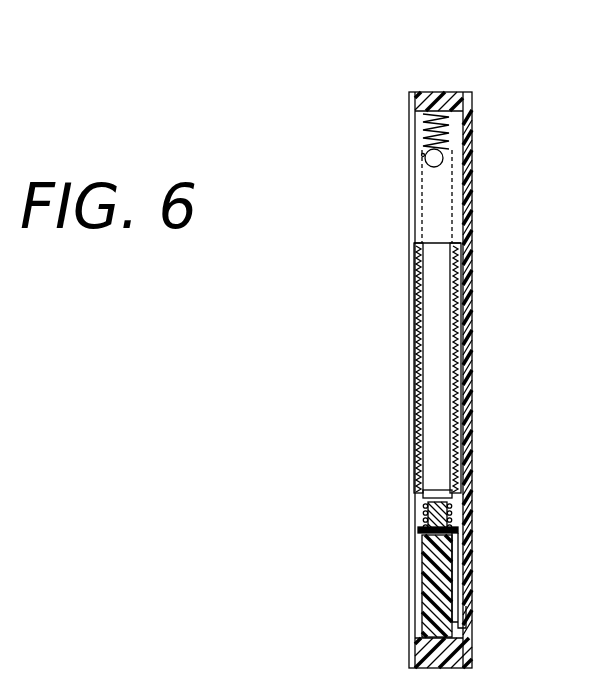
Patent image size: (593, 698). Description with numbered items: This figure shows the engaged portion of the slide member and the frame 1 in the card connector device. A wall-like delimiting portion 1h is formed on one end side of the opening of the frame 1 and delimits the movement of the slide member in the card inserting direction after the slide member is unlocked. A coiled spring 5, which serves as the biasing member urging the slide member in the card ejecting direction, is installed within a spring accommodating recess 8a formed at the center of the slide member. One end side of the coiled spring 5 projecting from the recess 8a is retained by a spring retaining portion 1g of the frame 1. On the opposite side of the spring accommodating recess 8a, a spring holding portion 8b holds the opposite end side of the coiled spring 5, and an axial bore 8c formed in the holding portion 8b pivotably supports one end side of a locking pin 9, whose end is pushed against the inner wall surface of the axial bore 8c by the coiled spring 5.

The frame 1 is at (478, 383).
The delimiting portion 1h is at (438, 93).
The spring retaining portion 1g is at (441, 158).
The coiled spring 5 is at (446, 132).
The spring accommodating recess 8a is at (436, 352).
The spring holding portion 8b is at (430, 514).
The axial bore 8c is at (430, 555).
The locking pin 9 is at (454, 548).